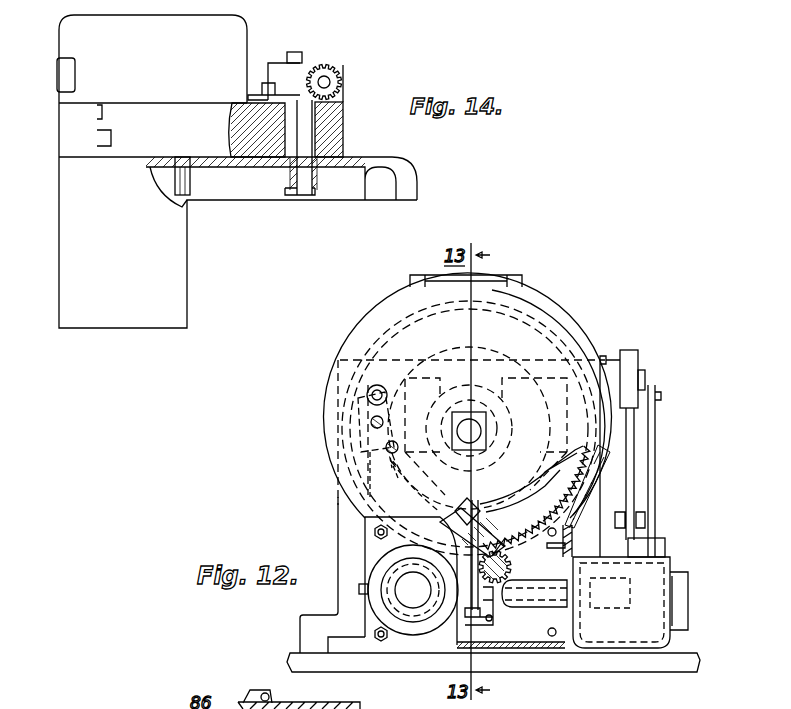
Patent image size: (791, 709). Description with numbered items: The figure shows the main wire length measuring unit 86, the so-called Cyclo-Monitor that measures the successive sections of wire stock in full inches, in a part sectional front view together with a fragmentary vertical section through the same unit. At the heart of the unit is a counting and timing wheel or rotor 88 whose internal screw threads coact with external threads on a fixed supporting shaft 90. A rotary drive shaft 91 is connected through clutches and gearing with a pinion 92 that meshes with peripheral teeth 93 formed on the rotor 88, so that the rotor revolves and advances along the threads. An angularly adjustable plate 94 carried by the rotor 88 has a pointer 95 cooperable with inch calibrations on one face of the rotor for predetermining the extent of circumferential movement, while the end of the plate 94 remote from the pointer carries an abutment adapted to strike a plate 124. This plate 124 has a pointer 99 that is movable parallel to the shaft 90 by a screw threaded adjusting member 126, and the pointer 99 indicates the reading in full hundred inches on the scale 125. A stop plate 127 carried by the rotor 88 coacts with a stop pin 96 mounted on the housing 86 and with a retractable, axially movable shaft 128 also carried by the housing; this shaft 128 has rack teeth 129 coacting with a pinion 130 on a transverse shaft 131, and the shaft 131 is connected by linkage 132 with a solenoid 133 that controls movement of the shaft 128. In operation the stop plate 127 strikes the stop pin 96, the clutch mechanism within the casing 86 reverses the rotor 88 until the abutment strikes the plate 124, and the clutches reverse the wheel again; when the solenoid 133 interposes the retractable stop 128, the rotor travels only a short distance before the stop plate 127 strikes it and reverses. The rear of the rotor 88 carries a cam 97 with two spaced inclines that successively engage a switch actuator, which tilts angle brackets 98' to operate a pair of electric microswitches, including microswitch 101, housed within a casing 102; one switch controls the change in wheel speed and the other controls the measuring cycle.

In FIG. 14, the main length measuring unit 86 is at (398, 187).
In FIG. 12, the main length measuring unit 86 is at (358, 340).
In FIG. 12, the counting and timing wheel or rotor 88 is at (550, 488).
In FIG. 12, the fixed supporting shaft 90 is at (489, 410).
In FIG. 12, the rotary drive shaft 91 is at (466, 525).
In FIG. 12, the pinion 92 is at (510, 561).
In FIG. 12, the peripheral teeth 93 is at (545, 528).
In FIG. 12, the angularly adjustable plate 94 is at (478, 496).
In FIG. 12, the pointer 95 is at (573, 463).
In FIG. 14, the stop pin 96 is at (176, 206).
In FIG. 12, the stop pin 96 is at (399, 516).
In FIG. 12, the cam 97 is at (382, 476).
In FIG. 12, the angle brackets 98' is at (498, 570).
In FIG. 12, the pointer 99 is at (359, 591).
In FIG. 12, the electric microswitch 101 is at (594, 654).
In FIG. 12, the casing 102 is at (595, 602).
In FIG. 12, the plate 124 is at (466, 511).
In FIG. 12, the scale 125 is at (365, 578).
In FIG. 12, the screw threaded adjusting member 126 is at (413, 597).
In FIG. 12, the stop plate 127 is at (365, 415).
In FIG. 14, the retractable axially movable shaft 128 is at (300, 197).
In FIG. 12, the retractable axially movable shaft 128 is at (368, 390).
In FIG. 14, the rack teeth 129 is at (307, 78).
In FIG. 14, the pinion 130 is at (340, 70).
In FIG. 14, the transverse shaft 131 is at (331, 82).
In FIG. 12, the transverse shaft 131 is at (645, 378).
In FIG. 12, the linkage 132 is at (655, 452).
In FIG. 12, the solenoid 133 is at (650, 544).